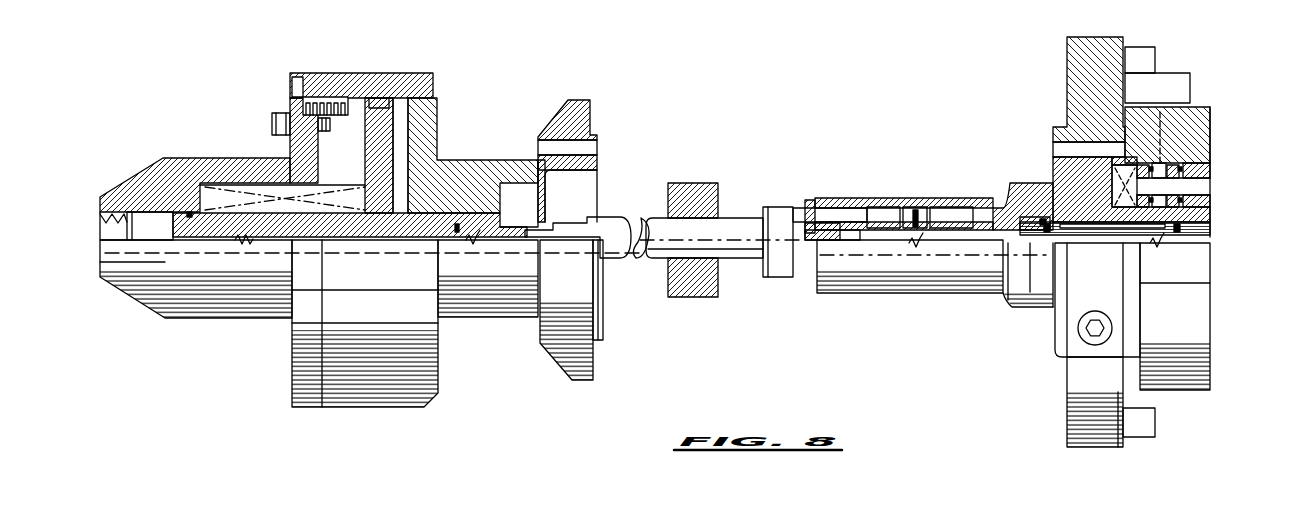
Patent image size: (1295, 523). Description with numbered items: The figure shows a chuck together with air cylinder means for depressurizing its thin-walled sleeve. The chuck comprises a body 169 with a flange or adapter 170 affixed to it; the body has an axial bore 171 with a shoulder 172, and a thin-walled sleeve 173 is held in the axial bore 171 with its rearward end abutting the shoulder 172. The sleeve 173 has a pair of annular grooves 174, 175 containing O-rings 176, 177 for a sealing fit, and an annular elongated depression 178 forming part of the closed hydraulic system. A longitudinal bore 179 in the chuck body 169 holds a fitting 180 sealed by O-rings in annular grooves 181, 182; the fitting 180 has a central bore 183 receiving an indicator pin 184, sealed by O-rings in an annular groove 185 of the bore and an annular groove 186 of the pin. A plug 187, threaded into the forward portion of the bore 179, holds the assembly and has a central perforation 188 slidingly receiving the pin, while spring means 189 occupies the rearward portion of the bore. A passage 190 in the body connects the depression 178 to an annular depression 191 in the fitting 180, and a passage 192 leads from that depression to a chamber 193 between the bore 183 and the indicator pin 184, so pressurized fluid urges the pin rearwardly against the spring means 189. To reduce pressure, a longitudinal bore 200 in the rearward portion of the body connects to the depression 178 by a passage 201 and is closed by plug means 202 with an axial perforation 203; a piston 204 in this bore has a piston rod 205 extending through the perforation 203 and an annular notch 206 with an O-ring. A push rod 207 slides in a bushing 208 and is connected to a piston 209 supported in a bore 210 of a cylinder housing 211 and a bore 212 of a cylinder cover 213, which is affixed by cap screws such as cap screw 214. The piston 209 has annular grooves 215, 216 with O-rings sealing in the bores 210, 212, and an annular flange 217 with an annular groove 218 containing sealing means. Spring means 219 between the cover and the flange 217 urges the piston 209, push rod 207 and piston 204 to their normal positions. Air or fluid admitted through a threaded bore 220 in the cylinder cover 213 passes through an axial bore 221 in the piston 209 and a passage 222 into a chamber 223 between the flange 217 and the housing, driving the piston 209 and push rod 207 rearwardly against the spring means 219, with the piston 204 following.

The chuck body 169 is at (1208, 364).
The flange or adapter 170 is at (1075, 430).
The axial bore 171 is at (1003, 233).
The shoulder 172 is at (1012, 233).
The thin-walled sleeve 173 is at (1077, 243).
The annular groove 174 is at (1053, 262).
The annular groove 175 is at (1180, 230).
The O-ring 176 is at (1045, 222).
The O-ring 177 is at (1213, 224).
The annular elongated depression 178 is at (1088, 236).
The longitudinal bore 179 is at (1210, 135).
The fitting 180 is at (1210, 115).
The annular groove 181 is at (1150, 165).
The annular groove 182 is at (1210, 150).
The central bore 183 is at (1165, 172).
The indicator pin 184 is at (1123, 158).
The annular groove 185 is at (1215, 175).
The annular groove 186 is at (1128, 205).
The plug 187 is at (1215, 211).
The central perforation 188 is at (1215, 200).
The spring means 189 is at (1110, 205).
The passage 190 is at (1150, 236).
The annular depression 191 is at (1168, 236).
The passage 192 is at (1122, 232).
The chamber 193 is at (1195, 190).
The longitudinal bore 200 is at (935, 208).
The passage 201 is at (1000, 203).
The plug means 202 is at (822, 199).
The axial perforation 203 is at (838, 208).
The piston 204 is at (905, 210).
The piston rod 205 is at (855, 233).
The annular notch 206 is at (920, 218).
The push rod 207 is at (735, 262).
The bushing 208 is at (693, 183).
The piston 209 is at (503, 238).
The bore 210 is at (432, 225).
The cylinder housing 211 is at (548, 130).
The bore 212 is at (152, 205).
The cylinder cover 213 is at (201, 163).
The cap screw 214 is at (323, 76).
The annular groove 215 is at (453, 238).
The annular groove 216 is at (190, 219).
The annular flange 217 is at (402, 118).
The annular groove 218 is at (395, 97).
The spring means 219 is at (283, 190).
The threaded bore 220 is at (100, 214).
The axial bore 221 is at (330, 241).
The passage 222 is at (396, 238).
The chamber 223 is at (402, 155).